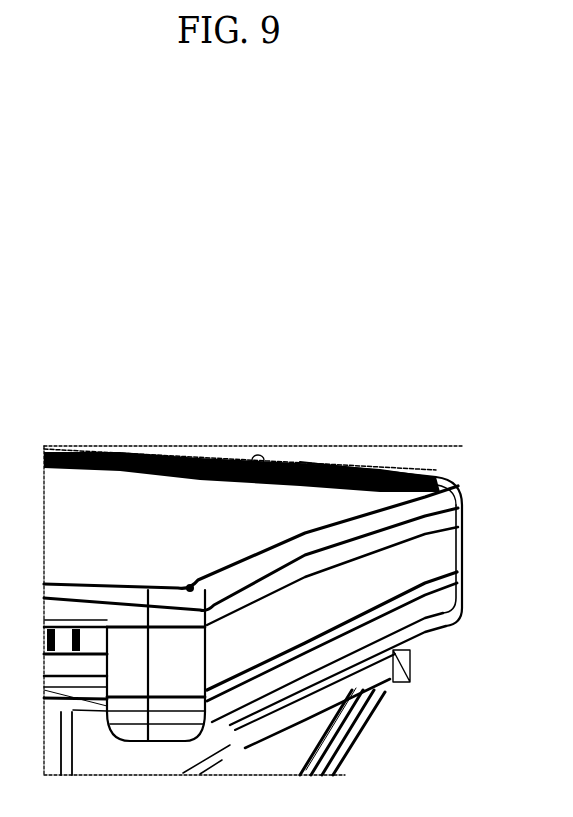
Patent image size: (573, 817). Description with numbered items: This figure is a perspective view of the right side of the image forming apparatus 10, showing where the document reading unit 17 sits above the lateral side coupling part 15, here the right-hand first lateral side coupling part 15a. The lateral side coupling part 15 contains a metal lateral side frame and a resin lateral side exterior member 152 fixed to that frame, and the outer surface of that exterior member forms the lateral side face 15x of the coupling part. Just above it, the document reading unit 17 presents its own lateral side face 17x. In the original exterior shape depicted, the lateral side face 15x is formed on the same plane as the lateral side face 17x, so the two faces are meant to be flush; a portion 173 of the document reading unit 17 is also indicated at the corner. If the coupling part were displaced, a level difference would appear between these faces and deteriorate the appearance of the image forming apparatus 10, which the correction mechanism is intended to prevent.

The image forming apparatus 10 is at (74, 433).
The document reading unit 17 is at (471, 530).
The corner portion of upper housing 173 is at (190, 590).
The lateral side coupling part 15 is at (494, 611).
The first lateral side coupling part 15a is at (370, 653).
The lateral side face of the document reading unit 17x is at (358, 586).
The lateral side face of the lateral side coupling part 15x is at (360, 634).
The lateral side exterior member 152 is at (330, 712).